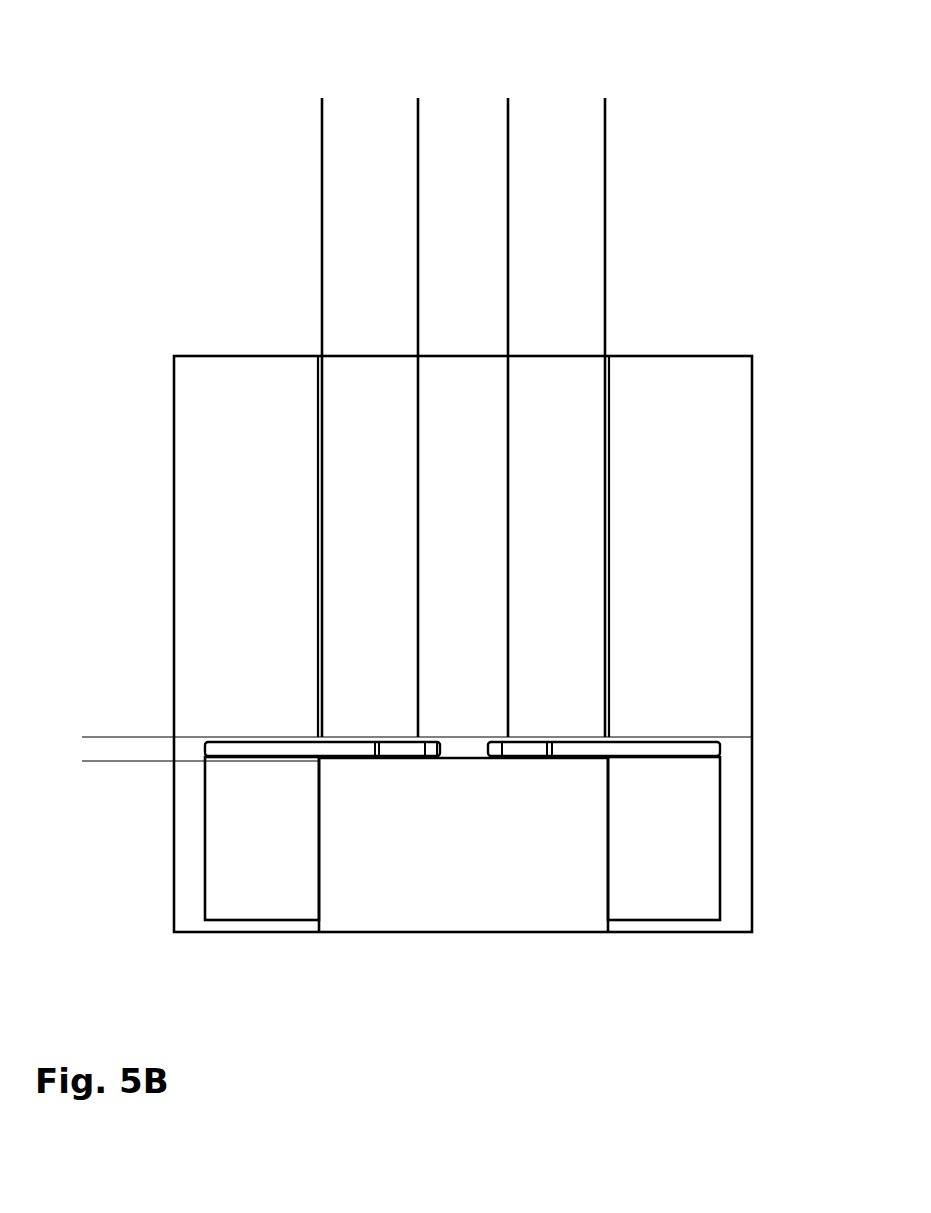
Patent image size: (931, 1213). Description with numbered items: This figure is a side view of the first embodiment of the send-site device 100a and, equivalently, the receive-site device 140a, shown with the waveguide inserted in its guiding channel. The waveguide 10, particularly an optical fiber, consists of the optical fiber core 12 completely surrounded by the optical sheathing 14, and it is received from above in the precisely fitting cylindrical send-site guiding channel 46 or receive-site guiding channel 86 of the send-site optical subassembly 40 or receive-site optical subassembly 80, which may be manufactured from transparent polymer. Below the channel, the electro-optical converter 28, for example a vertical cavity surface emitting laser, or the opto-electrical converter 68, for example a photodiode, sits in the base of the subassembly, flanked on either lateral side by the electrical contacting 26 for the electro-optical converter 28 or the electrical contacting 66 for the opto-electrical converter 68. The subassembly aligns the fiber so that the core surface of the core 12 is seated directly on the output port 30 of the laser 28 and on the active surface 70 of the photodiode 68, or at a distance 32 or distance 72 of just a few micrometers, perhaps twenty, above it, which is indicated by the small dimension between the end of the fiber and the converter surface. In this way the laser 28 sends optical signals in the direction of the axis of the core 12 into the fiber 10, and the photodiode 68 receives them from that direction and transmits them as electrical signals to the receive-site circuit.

The waveguide 10 is at (630, 85).
The optical fiber core 12 is at (458, 158).
The optical sheathing 14 is at (367, 188).
The send-site device 100a is at (445, 514).
The receive-site device 140a is at (153, 256).
The send-site optical subassembly 40 is at (496, 604).
The receive-site optical subassembly 80 is at (675, 407).
The send-site guiding channel 46 is at (353, 546).
The receive-site guiding channel 86 is at (320, 550).
The output port of the electro-optical converter 30 is at (515, 557).
The active surface of the opto-electrical converter 70 is at (457, 758).
The distance between output port and core surface 32 is at (410, 748).
The distance between core and input port 72 is at (95, 690).
The electrical contacting for electro-optical converter 26 is at (460, 838).
The electrical contacting for opto-electrical converter 66 is at (262, 862).
The electro-optical converter 28 is at (463, 891).
The opto-electrical converter 68 is at (458, 882).